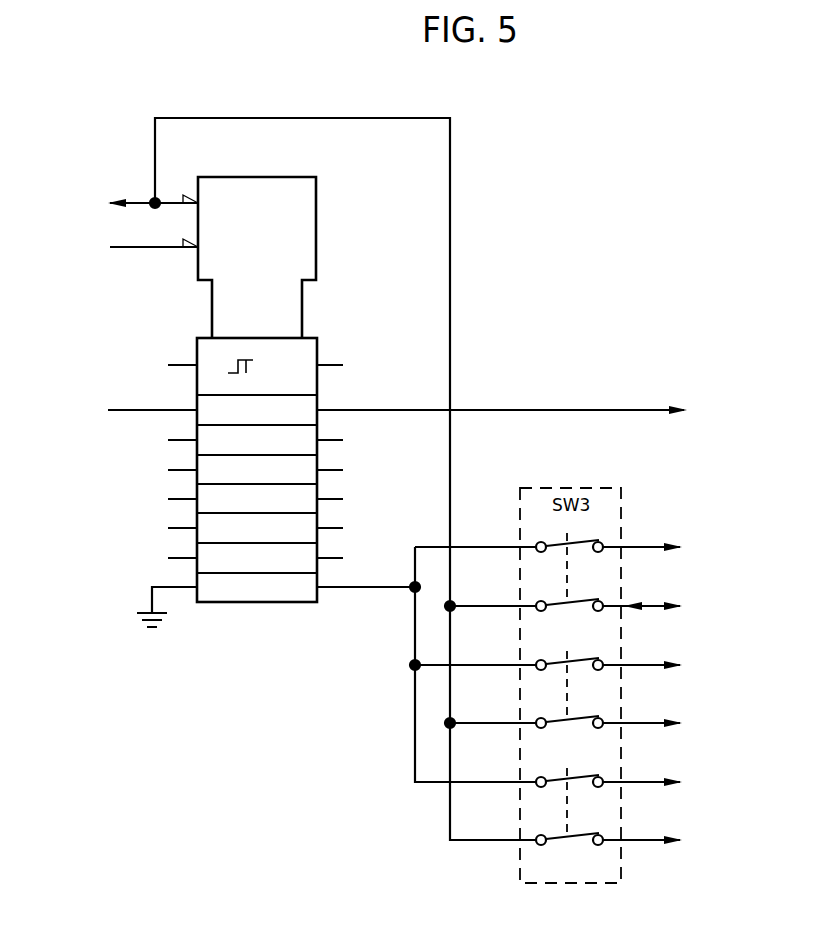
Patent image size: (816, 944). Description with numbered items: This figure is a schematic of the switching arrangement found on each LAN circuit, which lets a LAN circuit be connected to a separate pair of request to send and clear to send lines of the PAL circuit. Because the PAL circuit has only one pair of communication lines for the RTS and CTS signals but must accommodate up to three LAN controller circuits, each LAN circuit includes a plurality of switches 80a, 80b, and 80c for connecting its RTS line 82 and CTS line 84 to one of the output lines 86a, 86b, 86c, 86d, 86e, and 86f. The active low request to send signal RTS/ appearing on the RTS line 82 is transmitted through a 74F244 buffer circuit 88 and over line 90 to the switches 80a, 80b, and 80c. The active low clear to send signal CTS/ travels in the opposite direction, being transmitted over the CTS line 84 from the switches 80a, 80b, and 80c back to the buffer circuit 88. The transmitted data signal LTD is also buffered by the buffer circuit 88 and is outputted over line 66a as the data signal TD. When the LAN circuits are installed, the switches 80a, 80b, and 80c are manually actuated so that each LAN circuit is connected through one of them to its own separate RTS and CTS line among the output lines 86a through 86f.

The CTS line 84 is at (132, 203).
The RTS line 82 is at (147, 247).
The 74F244 buffer circuit 88 is at (312, 247).
The line 66a is at (615, 410).
The line 90 is at (360, 590).
The switch 80a is at (567, 580).
The switch 80b is at (567, 698).
The switch 80c is at (567, 815).
The output line 86a is at (648, 544).
The output line 86b is at (648, 603).
The output line 86c is at (648, 662).
The output line 86d is at (648, 720).
The output line 86e is at (648, 779).
The output line 86f is at (648, 837).